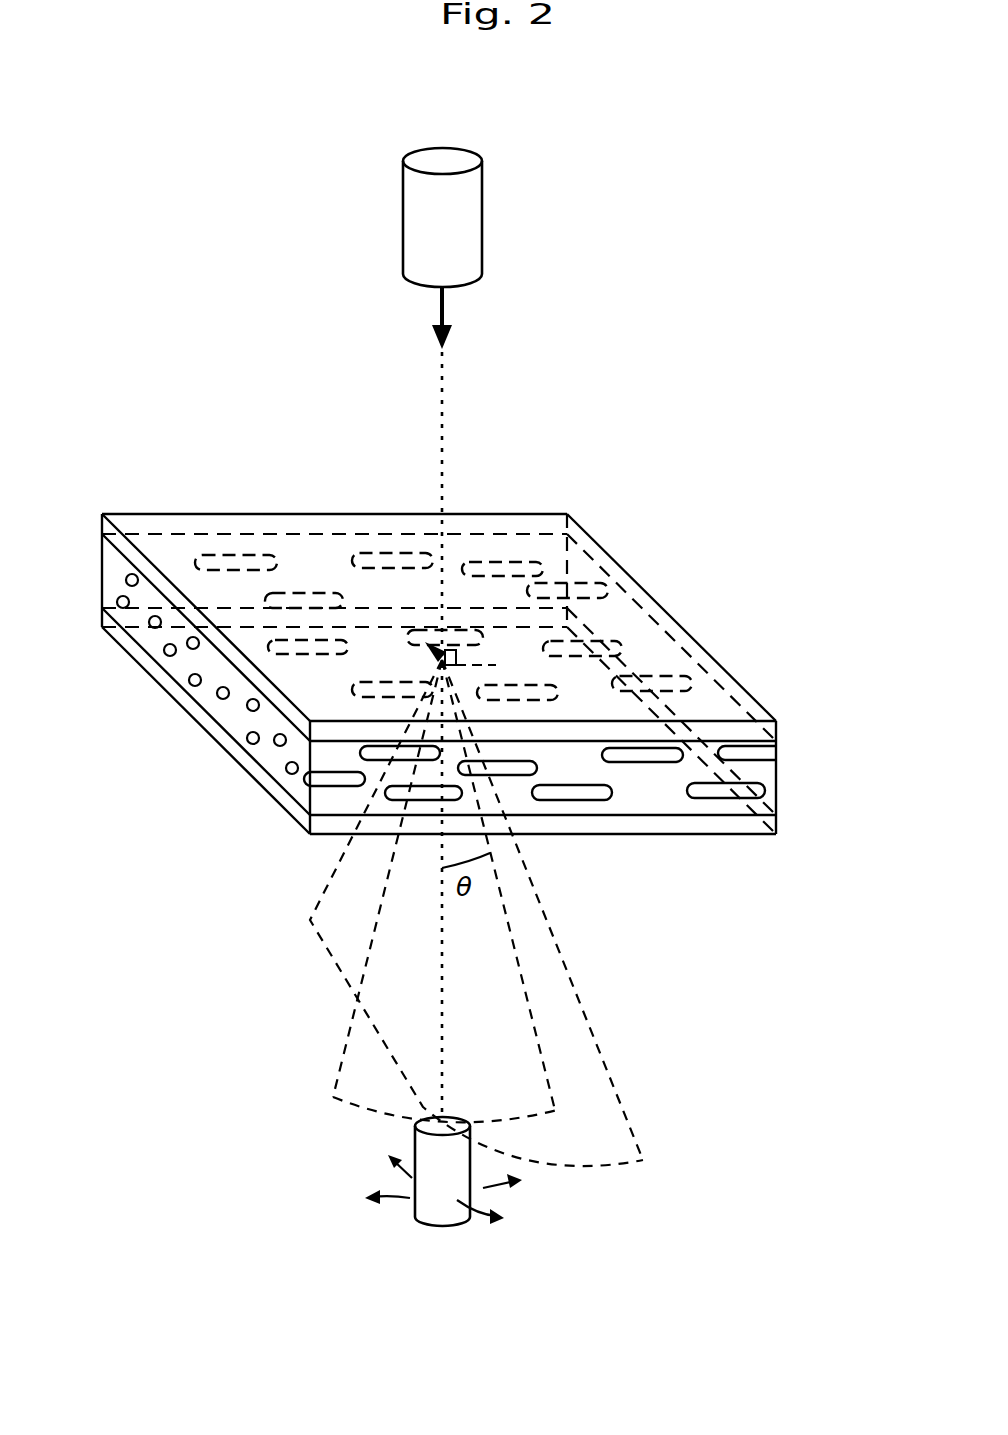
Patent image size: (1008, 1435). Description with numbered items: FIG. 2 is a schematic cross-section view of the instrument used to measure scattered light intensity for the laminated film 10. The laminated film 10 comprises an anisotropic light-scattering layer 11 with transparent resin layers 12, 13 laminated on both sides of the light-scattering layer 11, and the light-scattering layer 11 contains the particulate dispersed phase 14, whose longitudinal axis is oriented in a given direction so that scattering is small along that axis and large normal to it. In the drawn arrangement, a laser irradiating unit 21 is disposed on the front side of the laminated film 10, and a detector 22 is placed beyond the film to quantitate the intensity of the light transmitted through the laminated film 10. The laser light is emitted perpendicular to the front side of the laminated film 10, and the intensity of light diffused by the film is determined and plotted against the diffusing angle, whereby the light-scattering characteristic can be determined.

The laminated film 10 is at (493, 698).
The anisotropic light-scattering layer 11 is at (763, 772).
The transparent resin layer 12 is at (762, 729).
The transparent resin layer 13 is at (748, 832).
The particulate dispersed phase 14 is at (587, 797).
The laser irradiating unit 21 is at (463, 215).
The detector 22 is at (440, 1218).